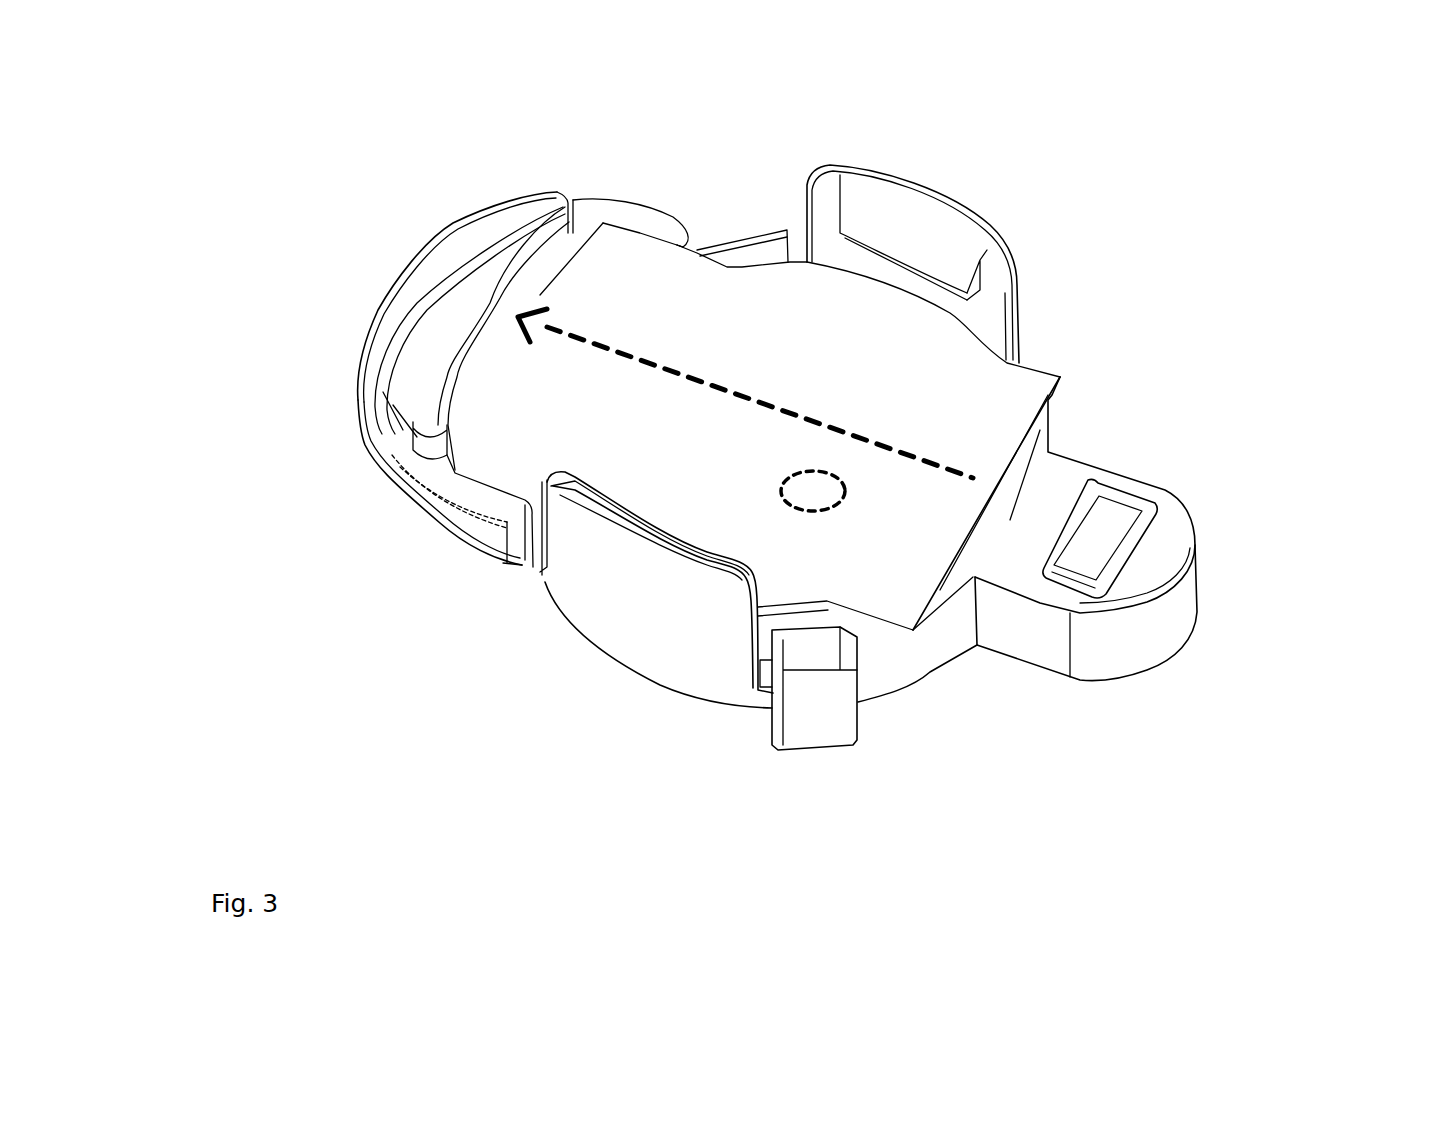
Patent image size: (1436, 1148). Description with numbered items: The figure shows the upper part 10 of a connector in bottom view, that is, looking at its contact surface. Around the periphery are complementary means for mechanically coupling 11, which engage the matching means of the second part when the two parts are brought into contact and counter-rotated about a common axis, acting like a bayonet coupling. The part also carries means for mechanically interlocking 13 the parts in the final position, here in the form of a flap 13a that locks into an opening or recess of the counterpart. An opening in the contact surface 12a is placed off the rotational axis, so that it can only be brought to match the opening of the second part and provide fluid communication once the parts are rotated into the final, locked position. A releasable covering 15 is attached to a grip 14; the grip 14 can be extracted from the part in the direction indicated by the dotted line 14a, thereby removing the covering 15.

The upper part 10 is at (709, 492).
The means for mechanically coupling 11 is at (925, 197).
The opening in the contact surface 12a is at (844, 497).
The means for mechanically interlocking 13 is at (1155, 549).
The flap 13a is at (1087, 565).
The grip 14 is at (408, 307).
The extraction direction 14a is at (745, 385).
The releasable covering 15 is at (603, 249).